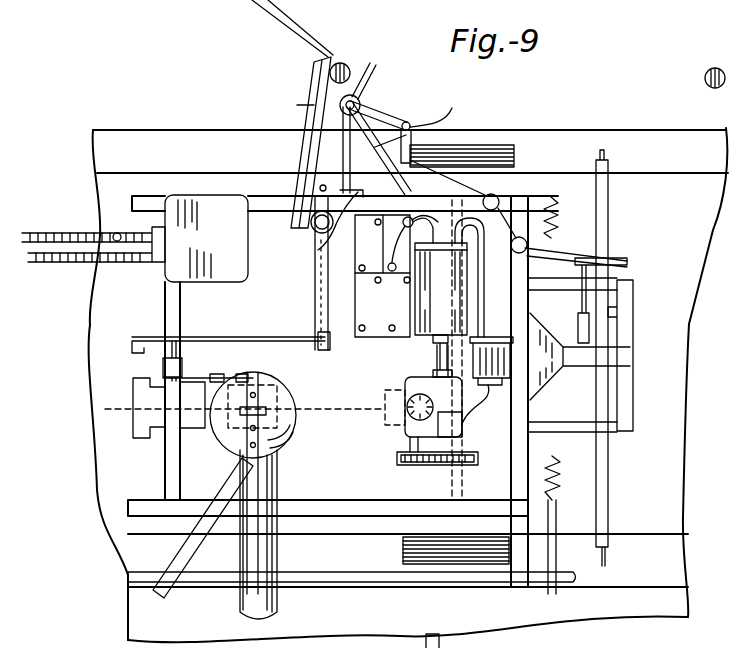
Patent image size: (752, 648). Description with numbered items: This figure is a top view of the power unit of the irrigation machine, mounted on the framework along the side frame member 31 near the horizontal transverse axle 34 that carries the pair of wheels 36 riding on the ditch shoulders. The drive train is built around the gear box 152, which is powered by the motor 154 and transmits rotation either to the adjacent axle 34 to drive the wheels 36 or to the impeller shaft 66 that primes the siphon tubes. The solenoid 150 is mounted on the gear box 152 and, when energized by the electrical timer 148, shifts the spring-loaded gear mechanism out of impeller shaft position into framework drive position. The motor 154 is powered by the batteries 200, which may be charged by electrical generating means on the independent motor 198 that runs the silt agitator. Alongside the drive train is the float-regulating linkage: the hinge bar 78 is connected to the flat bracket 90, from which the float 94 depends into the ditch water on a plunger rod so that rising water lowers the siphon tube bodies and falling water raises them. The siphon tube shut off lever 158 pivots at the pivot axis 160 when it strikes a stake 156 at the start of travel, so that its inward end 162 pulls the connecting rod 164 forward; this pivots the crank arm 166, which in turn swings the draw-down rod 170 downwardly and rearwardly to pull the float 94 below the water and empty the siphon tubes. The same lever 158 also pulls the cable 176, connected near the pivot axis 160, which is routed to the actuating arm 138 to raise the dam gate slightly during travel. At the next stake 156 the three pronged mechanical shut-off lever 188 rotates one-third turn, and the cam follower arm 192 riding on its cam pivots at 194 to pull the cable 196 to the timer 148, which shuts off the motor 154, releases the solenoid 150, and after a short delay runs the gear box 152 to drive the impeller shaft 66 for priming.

The side frame member 31 is at (150, 195).
The axle 34 is at (455, 512).
The wheels 36 is at (402, 552).
The impeller shaft 66 is at (392, 392).
The hinge bar 78 is at (205, 582).
The bracket 90 is at (186, 556).
The float 94 is at (228, 446).
The actuating arm 138 is at (624, 277).
The electrical timer 148 is at (498, 342).
The solenoid 150 is at (463, 430).
The gear box 152 is at (428, 377).
The motor 154 is at (458, 306).
The stake 156 is at (345, 65).
The siphon tube shut off lever 158 is at (318, 70).
The pivot axis 160 is at (312, 220).
The inward end of lever 162 is at (318, 305).
The connecting rod 164 is at (228, 337).
The crank arm 166 is at (128, 338).
The draw-down rod 170 is at (170, 390).
The cable 176 is at (316, 250).
The three pronged mechanical shut-off lever 188 is at (366, 85).
The cam follower arm 192 is at (388, 110).
The pivot of cam follower arm 194 is at (462, 129).
The cable 196 is at (495, 188).
The independent motor 198 is at (222, 244).
The batteries 200 is at (365, 257).